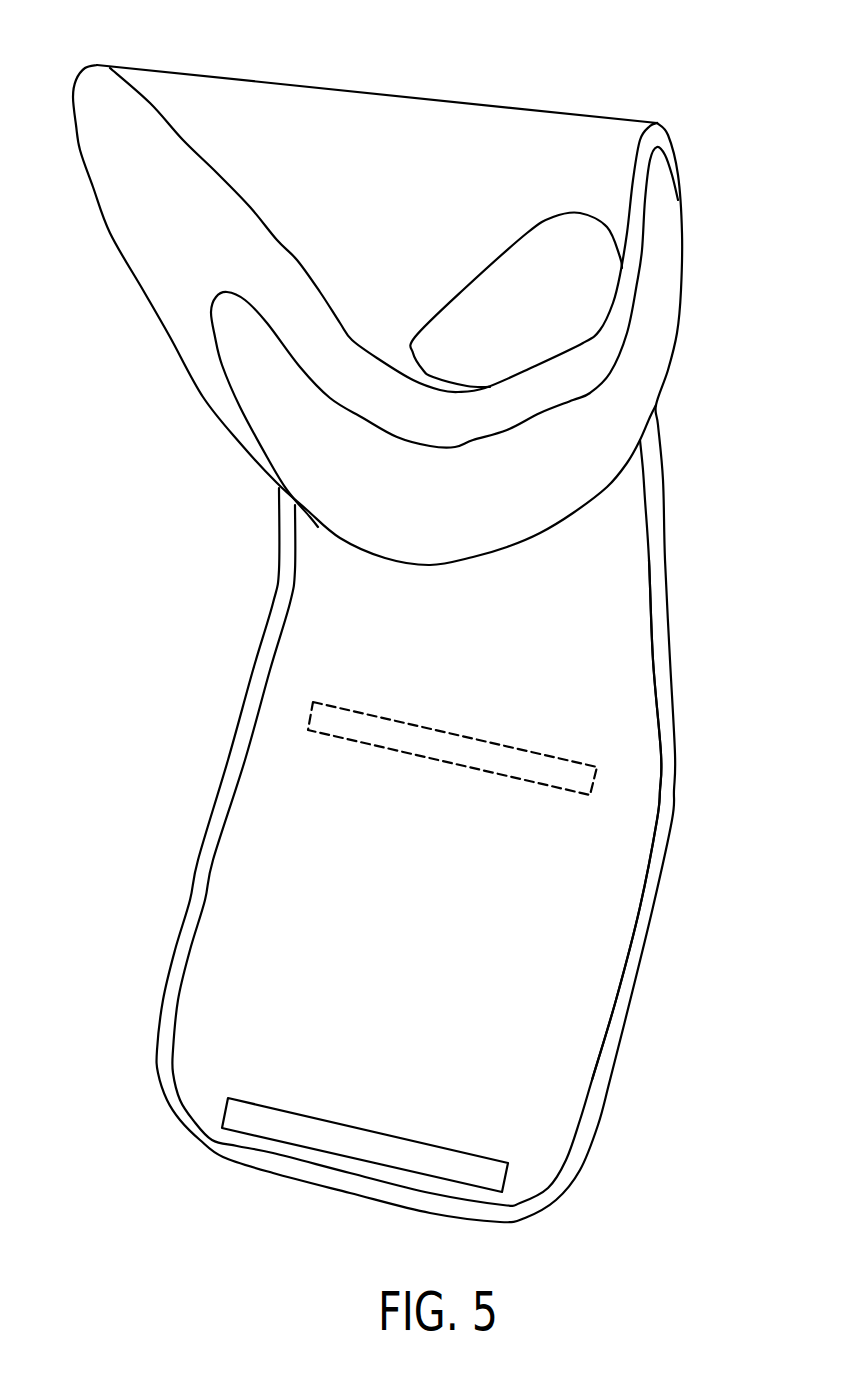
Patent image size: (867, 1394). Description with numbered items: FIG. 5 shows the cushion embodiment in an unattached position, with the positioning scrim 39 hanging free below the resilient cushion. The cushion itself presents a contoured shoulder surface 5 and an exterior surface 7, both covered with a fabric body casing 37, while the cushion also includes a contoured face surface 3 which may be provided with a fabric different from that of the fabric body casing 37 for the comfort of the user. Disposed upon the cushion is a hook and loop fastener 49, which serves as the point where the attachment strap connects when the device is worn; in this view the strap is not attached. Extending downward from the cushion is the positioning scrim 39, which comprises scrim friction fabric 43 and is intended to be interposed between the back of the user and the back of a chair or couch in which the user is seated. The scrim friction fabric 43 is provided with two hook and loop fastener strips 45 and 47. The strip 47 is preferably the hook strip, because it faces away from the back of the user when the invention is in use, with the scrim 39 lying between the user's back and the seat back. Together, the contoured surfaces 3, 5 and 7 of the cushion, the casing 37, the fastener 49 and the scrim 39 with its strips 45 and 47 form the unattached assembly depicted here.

The contoured face surface 3 is at (647, 390).
The contoured shoulder surface 5 is at (140, 179).
The exterior surface 7 is at (268, 112).
The fabric body casing 37 is at (500, 130).
The positioning scrim 39 is at (300, 877).
The scrim friction fabric 43 is at (560, 937).
The hook and loop fastener strip 45 is at (473, 1175).
The hook and loop fastener strip 47 is at (555, 768).
The hook and loop fastener 49 is at (583, 282).